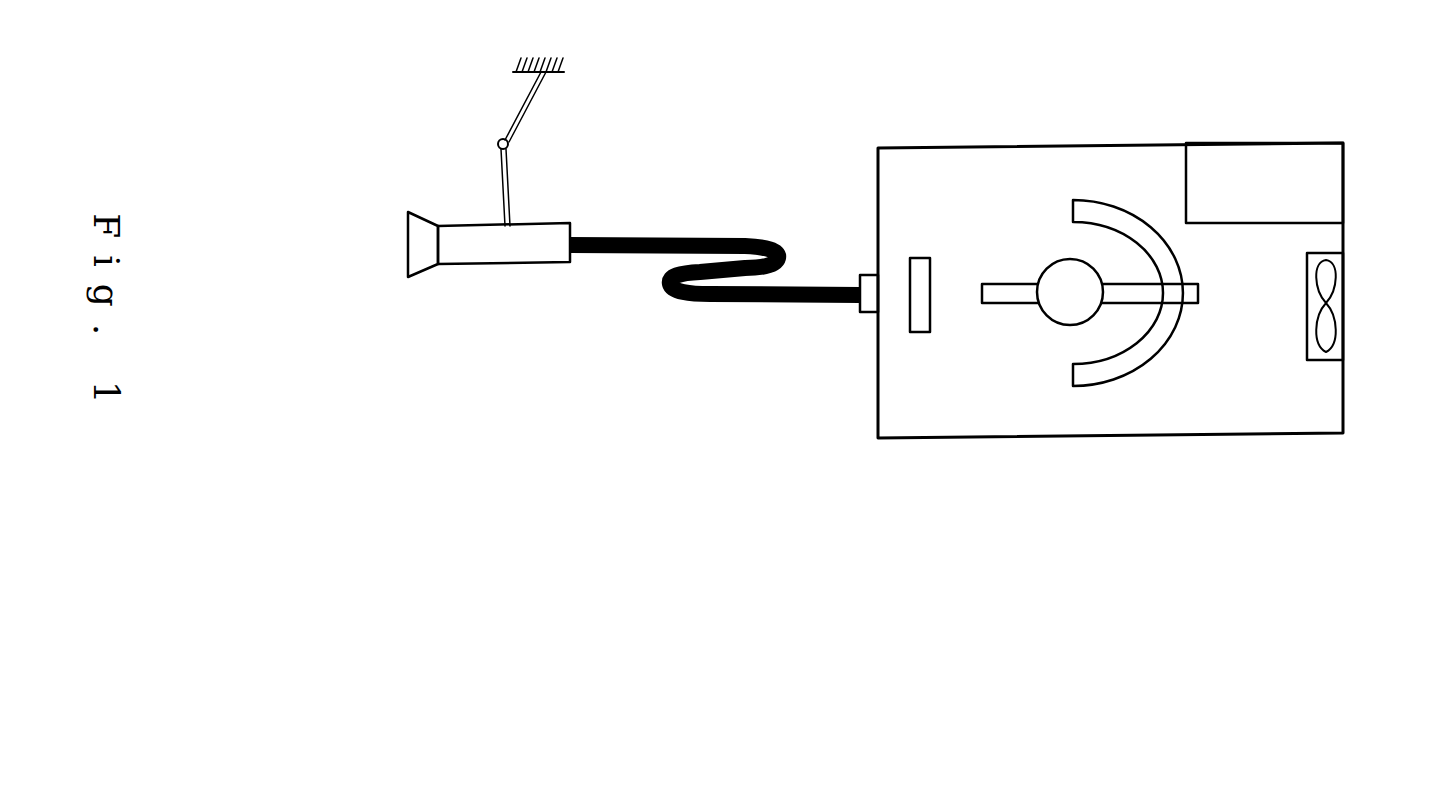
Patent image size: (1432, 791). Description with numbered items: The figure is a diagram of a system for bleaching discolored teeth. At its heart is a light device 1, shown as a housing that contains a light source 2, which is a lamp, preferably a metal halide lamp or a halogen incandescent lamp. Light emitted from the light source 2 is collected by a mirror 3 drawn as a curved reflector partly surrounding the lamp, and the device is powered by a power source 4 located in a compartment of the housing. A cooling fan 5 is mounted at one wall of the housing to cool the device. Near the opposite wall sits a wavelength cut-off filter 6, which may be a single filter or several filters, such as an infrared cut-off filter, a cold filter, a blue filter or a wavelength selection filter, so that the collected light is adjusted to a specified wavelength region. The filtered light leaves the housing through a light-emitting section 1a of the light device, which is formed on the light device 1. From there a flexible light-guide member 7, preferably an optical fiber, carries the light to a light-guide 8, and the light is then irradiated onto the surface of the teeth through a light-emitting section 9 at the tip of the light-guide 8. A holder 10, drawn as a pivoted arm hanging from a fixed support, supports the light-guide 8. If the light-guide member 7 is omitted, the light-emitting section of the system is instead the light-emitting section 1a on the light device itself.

The light device 1 is at (987, 447).
The light-emitting section of the light device 1a is at (870, 312).
The light source 2 is at (1043, 242).
The mirror 3 is at (1143, 377).
The power source 4 is at (1270, 167).
The cooling fan 5 is at (1343, 363).
The wavelength cut-off filter 6 is at (910, 318).
The light-guide member 7 is at (693, 220).
The light-guide 8 is at (537, 272).
The light-emitting section 9 is at (428, 207).
The holder 10 is at (532, 102).